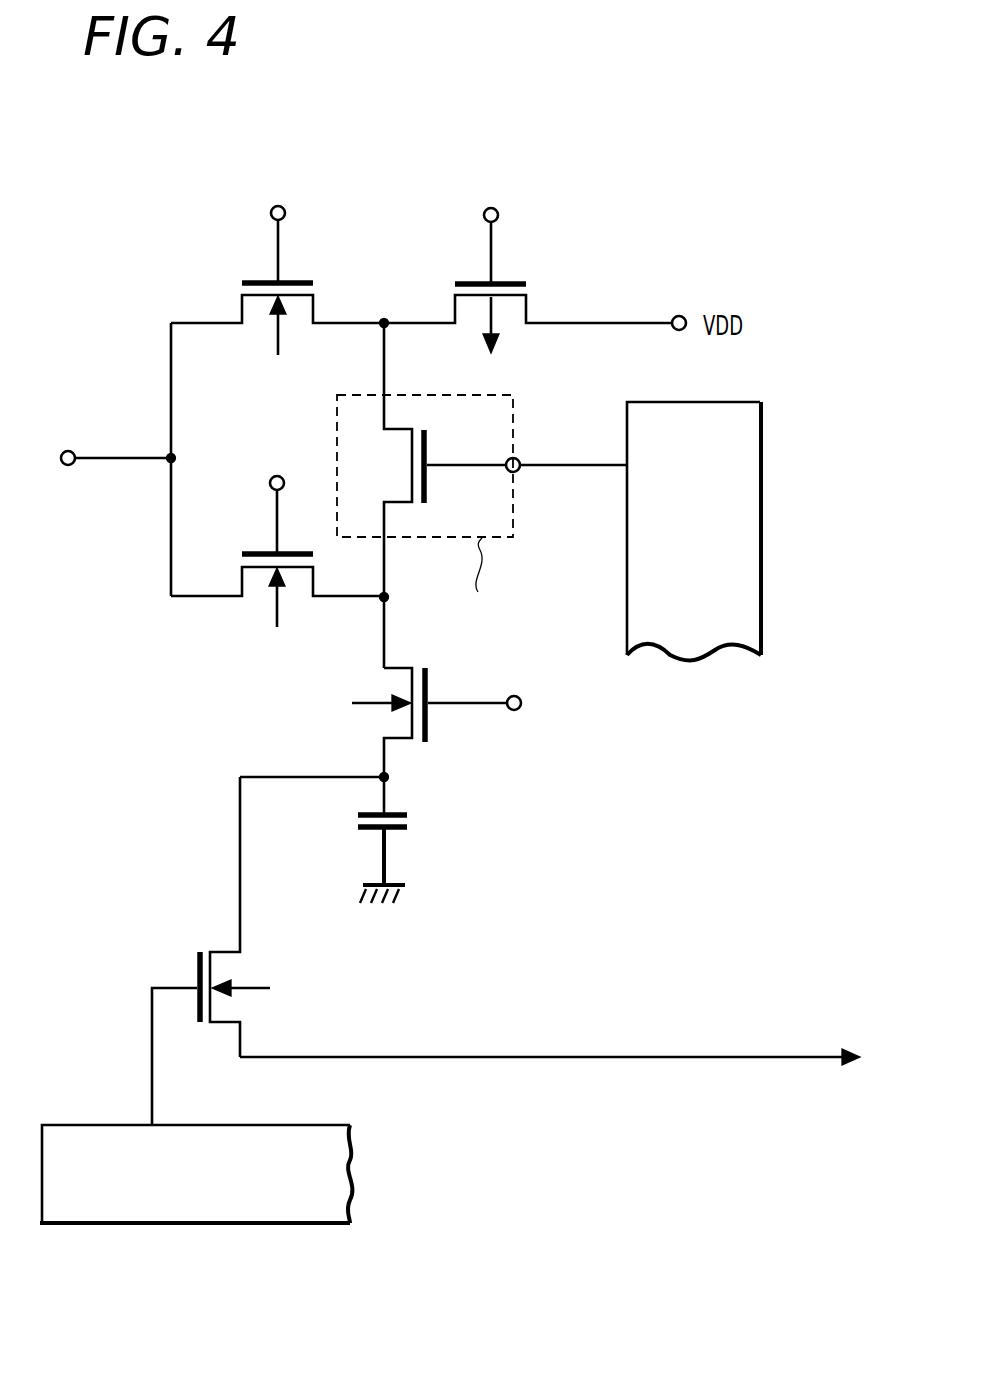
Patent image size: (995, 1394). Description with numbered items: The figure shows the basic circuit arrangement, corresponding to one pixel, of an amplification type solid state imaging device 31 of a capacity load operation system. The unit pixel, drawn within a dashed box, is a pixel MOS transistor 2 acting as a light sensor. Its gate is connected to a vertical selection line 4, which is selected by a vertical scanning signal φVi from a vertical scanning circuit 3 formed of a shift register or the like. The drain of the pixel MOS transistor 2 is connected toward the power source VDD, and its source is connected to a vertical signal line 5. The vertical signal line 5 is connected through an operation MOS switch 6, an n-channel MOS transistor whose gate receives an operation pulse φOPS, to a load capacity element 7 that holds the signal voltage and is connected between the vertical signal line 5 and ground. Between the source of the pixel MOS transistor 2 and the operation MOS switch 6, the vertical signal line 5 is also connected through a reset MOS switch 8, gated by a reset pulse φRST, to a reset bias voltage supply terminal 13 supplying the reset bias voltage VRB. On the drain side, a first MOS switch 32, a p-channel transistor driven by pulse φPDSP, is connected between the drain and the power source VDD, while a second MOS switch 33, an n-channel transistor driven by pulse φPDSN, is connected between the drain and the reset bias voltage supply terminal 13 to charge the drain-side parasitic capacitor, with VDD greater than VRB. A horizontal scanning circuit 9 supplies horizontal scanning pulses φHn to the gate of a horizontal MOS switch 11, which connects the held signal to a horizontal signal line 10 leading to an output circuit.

The amplification type solid state imaging device 31 is at (671, 144).
The second MOS switch 33 is at (300, 279).
The first MOS switch 32 is at (510, 279).
The reset bias voltage supply terminal 13 is at (68, 466).
The pixel MOS transistor 2 is at (398, 428).
The vertical selection line 4 is at (570, 463).
The vertical scanning circuit 3 is at (703, 402).
The reset MOS switch 8 is at (256, 585).
The vertical signal line 5 is at (383, 548).
The operation MOS switch 6 is at (436, 729).
The load capacity element 7 is at (410, 816).
The horizontal MOS switch 11 is at (235, 1003).
The horizontal signal line 10 is at (712, 1060).
The horizontal scanning circuit 9 is at (358, 1178).